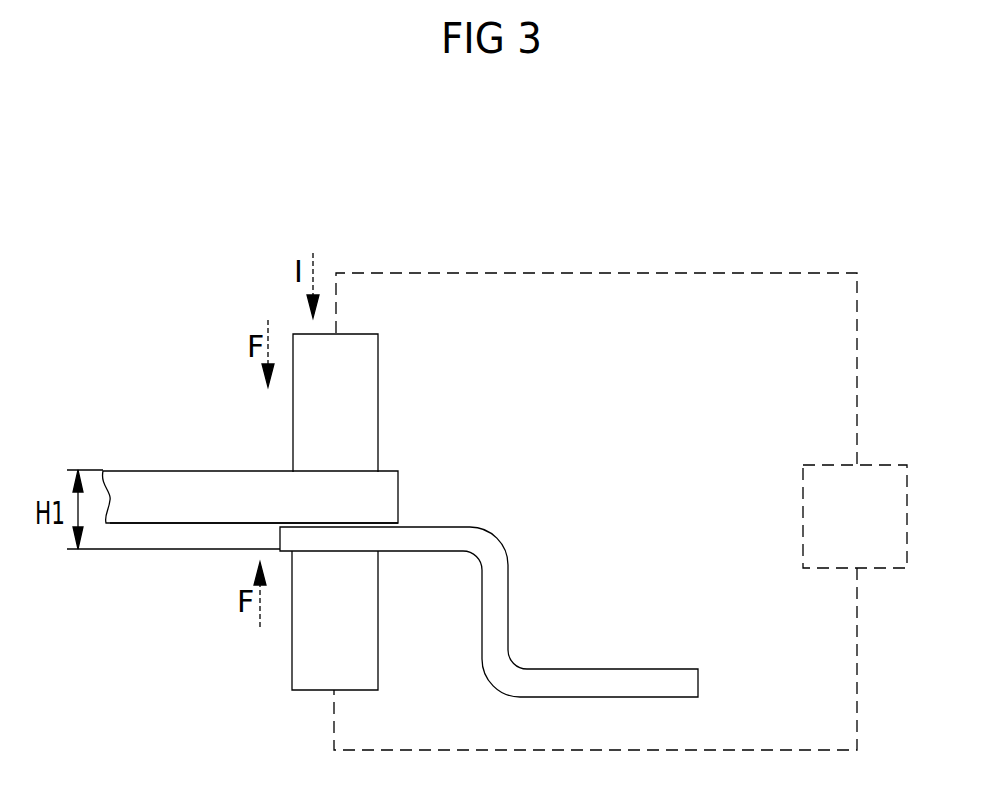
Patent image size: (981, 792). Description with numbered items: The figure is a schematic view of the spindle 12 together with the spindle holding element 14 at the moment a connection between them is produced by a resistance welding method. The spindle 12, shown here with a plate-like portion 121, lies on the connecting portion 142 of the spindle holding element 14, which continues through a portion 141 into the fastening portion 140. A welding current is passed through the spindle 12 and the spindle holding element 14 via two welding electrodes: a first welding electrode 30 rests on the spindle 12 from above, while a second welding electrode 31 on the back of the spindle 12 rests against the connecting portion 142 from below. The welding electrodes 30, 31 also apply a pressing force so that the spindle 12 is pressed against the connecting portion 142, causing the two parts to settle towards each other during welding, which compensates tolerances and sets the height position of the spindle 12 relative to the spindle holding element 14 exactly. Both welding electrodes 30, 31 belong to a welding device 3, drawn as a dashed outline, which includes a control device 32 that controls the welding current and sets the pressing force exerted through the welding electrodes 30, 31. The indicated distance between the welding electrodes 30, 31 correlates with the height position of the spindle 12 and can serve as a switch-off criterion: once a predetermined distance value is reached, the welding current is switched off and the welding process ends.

The welding device 3 is at (598, 265).
The spindle 12 is at (204, 525).
The plate portion 121 is at (214, 471).
The spindle holding element 14 is at (502, 578).
The fastening portion 140 is at (652, 687).
The bent portion of terminal 141 is at (493, 593).
The connecting portion 142 is at (424, 540).
The first welding electrode 30 is at (358, 382).
The second welding electrode 31 is at (316, 665).
The control device 32 is at (871, 478).